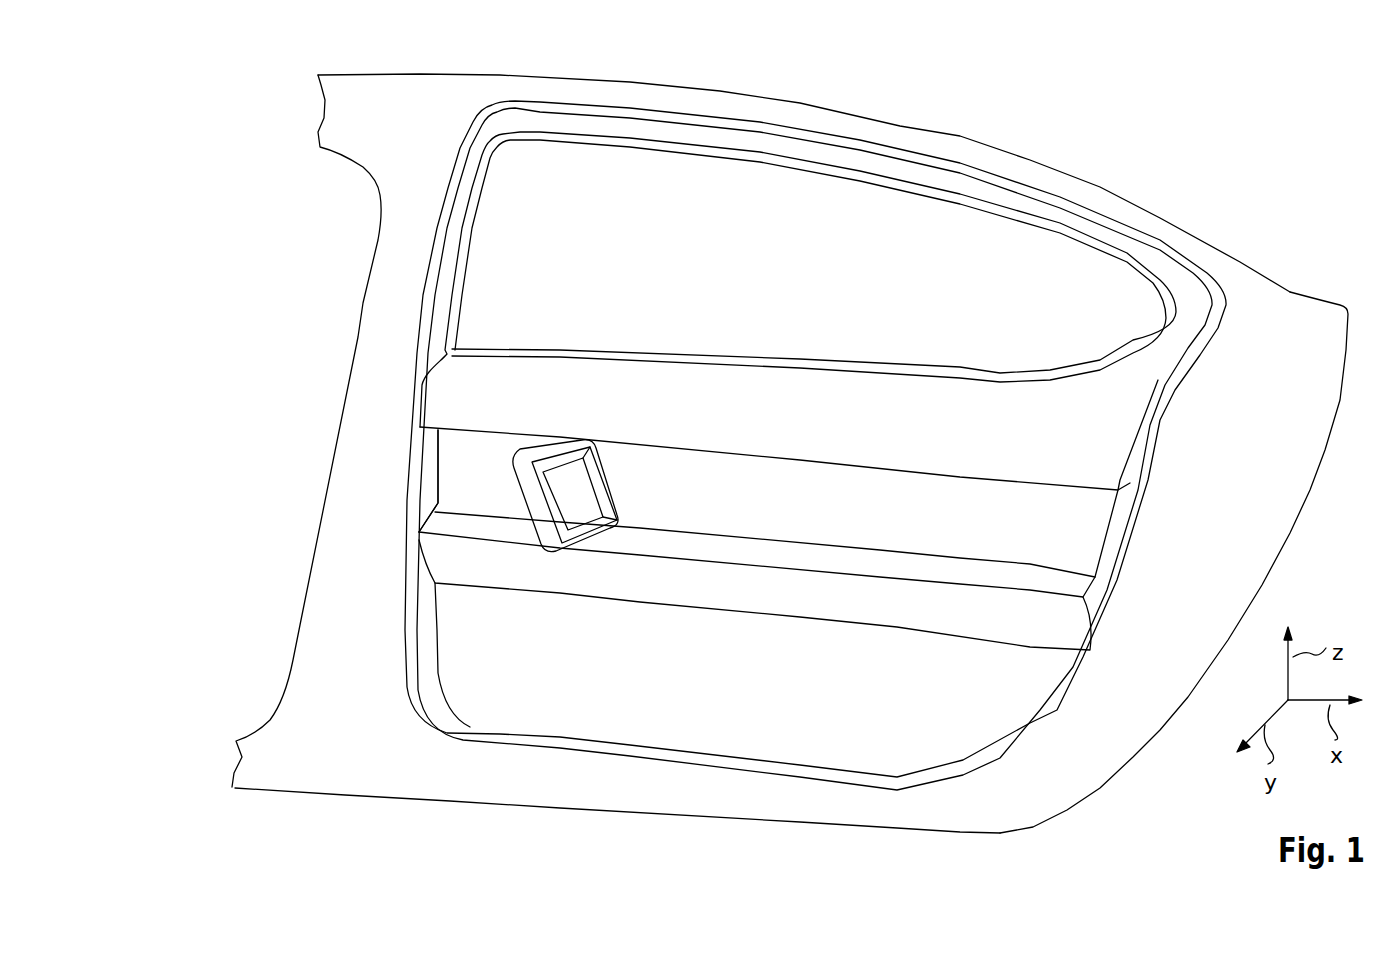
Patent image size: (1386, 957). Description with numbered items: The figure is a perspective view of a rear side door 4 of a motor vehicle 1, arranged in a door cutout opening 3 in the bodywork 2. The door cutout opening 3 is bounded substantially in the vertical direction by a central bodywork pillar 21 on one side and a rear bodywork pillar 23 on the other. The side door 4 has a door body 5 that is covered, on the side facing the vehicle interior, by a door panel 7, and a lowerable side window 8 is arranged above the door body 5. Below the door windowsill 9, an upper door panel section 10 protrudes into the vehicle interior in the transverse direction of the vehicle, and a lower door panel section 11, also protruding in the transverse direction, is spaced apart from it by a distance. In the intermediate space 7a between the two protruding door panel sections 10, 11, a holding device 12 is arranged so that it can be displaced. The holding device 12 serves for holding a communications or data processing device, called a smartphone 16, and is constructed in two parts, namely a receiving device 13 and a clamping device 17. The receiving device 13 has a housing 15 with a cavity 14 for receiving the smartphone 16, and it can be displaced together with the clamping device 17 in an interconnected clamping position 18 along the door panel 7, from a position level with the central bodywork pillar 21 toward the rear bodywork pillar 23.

The motor vehicle 1 is at (762, 453).
The bodywork 2 is at (762, 453).
The door cutout opening 3 is at (977, 150).
The side door 4 is at (798, 235).
The side window 8 is at (790, 207).
The door body 5 is at (788, 472).
The door panel 7 is at (788, 472).
The upper door panel section 10 is at (789, 445).
The intermediate space 7a is at (757, 503).
The lower door panel section 11 is at (755, 591).
The door windowsill 9 is at (797, 360).
The holding device 12 is at (411, 493).
The receiving device 13 is at (411, 493).
The housing 15 is at (411, 493).
The clamping device 17 is at (411, 493).
The clamping position 18 is at (411, 493).
The cavity 14 is at (626, 495).
The smartphone 16 is at (626, 495).
The central bodywork pillar 21 is at (367, 333).
The rear bodywork pillar 23 is at (1290, 310).